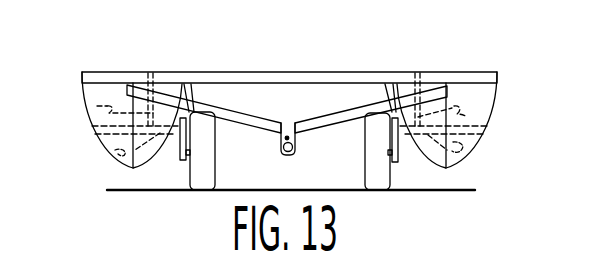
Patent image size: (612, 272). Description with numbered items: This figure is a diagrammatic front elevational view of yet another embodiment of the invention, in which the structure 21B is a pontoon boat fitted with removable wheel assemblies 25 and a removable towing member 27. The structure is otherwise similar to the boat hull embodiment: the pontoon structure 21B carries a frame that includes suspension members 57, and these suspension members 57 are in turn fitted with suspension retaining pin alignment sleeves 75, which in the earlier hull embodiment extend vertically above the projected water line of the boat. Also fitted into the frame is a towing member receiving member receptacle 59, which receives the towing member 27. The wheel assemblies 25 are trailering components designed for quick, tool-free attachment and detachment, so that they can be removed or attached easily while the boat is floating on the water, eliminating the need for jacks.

The structure 21B is at (231, 72).
The towing member 27 is at (238, 108).
The wheel assemblies 25 is at (356, 163).
The towing member receiving member receptacle 59 is at (141, 74).
The suspension retaining pin alignment sleeves 75 is at (97, 107).
The suspension members 57 is at (118, 150).